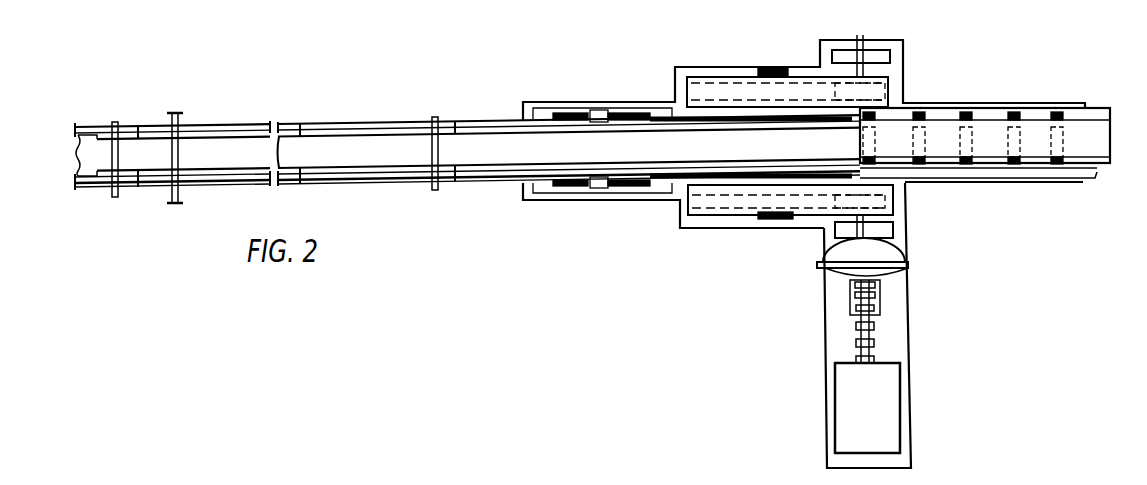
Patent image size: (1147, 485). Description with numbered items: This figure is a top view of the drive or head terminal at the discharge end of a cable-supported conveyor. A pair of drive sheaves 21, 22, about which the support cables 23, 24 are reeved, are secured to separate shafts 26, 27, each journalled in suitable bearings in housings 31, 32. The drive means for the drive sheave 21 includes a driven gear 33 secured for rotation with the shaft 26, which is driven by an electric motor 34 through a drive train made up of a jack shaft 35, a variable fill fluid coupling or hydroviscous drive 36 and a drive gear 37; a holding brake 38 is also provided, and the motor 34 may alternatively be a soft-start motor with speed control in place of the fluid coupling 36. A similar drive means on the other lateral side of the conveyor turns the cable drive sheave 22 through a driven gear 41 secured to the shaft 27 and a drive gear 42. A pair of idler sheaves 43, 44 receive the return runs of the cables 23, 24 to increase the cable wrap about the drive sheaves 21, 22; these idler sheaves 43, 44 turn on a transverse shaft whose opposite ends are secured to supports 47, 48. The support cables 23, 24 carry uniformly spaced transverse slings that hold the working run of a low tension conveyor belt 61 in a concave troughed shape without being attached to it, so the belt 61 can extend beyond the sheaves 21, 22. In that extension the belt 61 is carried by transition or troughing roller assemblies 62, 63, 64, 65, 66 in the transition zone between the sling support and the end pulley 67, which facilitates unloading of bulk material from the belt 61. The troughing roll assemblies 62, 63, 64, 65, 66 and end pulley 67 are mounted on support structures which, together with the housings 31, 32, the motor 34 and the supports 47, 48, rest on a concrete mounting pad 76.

The drive sheave 21 is at (742, 173).
The drive sheave 22 is at (791, 124).
The support cable 23 is at (324, 184).
The support cable 24 is at (336, 124).
The shaft 26 is at (785, 218).
The shaft 27 is at (770, 68).
The housing 31 is at (747, 216).
The housing 32 is at (797, 76).
The driven gear 33 is at (707, 228).
The electric motor 34 is at (858, 405).
The jack shaft 35 is at (870, 293).
The variable fill fluid coupling or hydroviscous drive 36 is at (888, 251).
The drive gear 37 is at (900, 196).
The holding brake 38 is at (890, 229).
The driven gear 41 is at (698, 72).
The drive gear 42 is at (904, 81).
The idler sheave 43 is at (562, 113).
The idler sheave 44 is at (568, 190).
The support 47 is at (630, 192).
The support 48 is at (623, 113).
The low tension conveyor belt 61 is at (476, 161).
The transition or troughing roller assembly 62 is at (881, 138).
The transition or troughing roller assembly 63 is at (931, 138).
The transition or troughing roller assembly 64 is at (968, 118).
The transition or troughing roller assembly 65 is at (1015, 118).
The transition or troughing roller assembly 66 is at (1064, 108).
The end pulley 67 is at (1100, 172).
The concrete mounting pad 76 is at (832, 328).